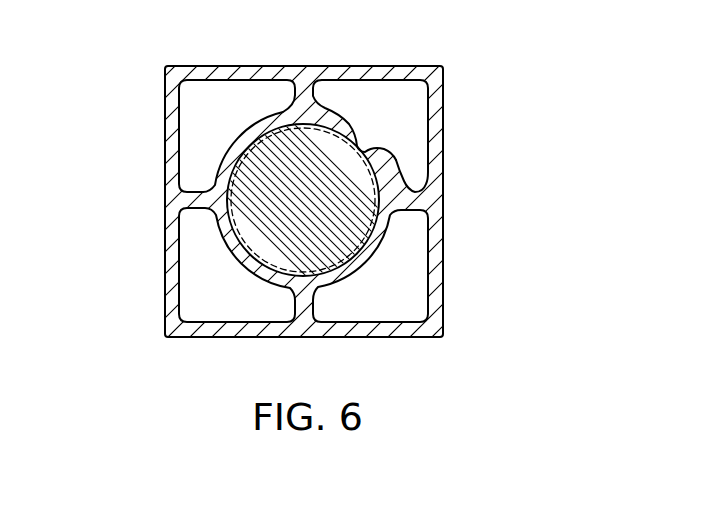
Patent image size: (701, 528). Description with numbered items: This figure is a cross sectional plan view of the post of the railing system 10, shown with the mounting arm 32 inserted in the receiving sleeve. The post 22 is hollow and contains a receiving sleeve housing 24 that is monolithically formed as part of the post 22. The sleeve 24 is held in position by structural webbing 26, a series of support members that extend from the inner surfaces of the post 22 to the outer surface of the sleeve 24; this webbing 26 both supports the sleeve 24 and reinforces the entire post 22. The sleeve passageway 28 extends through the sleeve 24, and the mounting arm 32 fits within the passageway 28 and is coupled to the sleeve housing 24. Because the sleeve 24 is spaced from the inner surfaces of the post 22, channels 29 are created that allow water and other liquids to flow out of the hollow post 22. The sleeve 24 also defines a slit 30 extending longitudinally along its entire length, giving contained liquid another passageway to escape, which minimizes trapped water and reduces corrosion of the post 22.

The railing system 10 is at (490, 61).
The post 22 is at (116, 212).
The receiving sleeve housing 24 is at (225, 145).
The structural webbing 26 is at (421, 182).
The sleeve passageway 28 is at (243, 250).
The channels 29 is at (224, 88).
The slit 30 is at (365, 139).
The mounting arm 32 is at (340, 250).